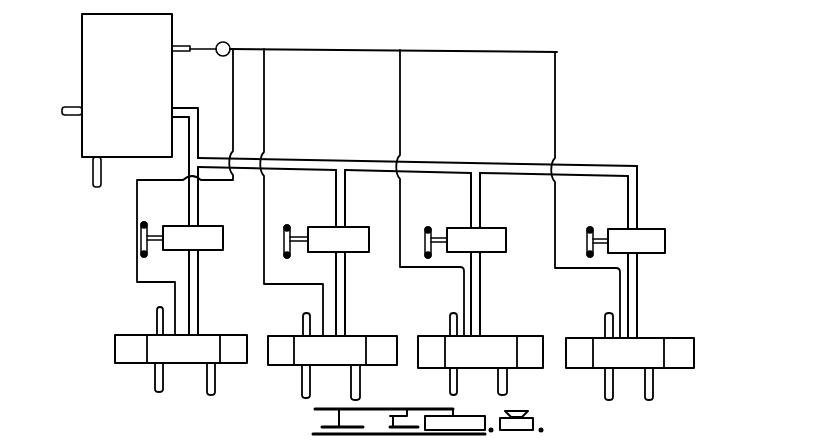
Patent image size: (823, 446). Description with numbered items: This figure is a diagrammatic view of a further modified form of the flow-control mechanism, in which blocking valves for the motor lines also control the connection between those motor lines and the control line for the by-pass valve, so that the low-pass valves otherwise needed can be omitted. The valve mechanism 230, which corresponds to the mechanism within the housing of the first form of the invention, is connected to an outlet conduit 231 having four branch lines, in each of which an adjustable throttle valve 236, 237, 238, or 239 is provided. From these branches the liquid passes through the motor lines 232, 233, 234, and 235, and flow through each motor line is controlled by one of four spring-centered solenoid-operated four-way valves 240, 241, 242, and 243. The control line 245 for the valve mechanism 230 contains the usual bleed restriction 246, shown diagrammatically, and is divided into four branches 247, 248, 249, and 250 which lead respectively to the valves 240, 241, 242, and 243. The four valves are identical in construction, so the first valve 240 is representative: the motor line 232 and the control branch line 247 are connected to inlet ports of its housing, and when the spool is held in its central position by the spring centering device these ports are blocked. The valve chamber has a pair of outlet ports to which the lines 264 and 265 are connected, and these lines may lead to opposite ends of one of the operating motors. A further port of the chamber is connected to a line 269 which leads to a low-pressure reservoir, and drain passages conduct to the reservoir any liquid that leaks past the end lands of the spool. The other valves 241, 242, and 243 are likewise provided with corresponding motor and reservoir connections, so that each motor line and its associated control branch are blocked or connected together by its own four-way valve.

The valve mechanism 230 is at (100, 61).
The outlet conduit 231 is at (436, 165).
The motor line 232 is at (195, 265).
The motor line 233 is at (340, 266).
The motor line 234 is at (481, 281).
The motor line 235 is at (636, 291).
The adjustable throttle valve 236 is at (172, 228).
The adjustable throttle valve 237 is at (320, 212).
The adjustable throttle valve 238 is at (462, 215).
The adjustable throttle valve 239 is at (618, 216).
The spring-centered solenoid-operated four-way valve 240 is at (205, 338).
The spring-centered solenoid-operated four-way valve 241 is at (353, 340).
The spring-centered solenoid-operated four-way valve 242 is at (490, 340).
The spring-centered solenoid-operated four-way valve 243 is at (646, 342).
The control line 245 is at (300, 50).
The bleed restriction 246 is at (228, 43).
The control branch line 247 is at (232, 80).
The control branch line 248 is at (266, 96).
The control branch line 249 is at (401, 102).
The control branch line 250 is at (556, 113).
The line 264 is at (155, 383).
The line 265 is at (216, 386).
The line 269 is at (157, 317).